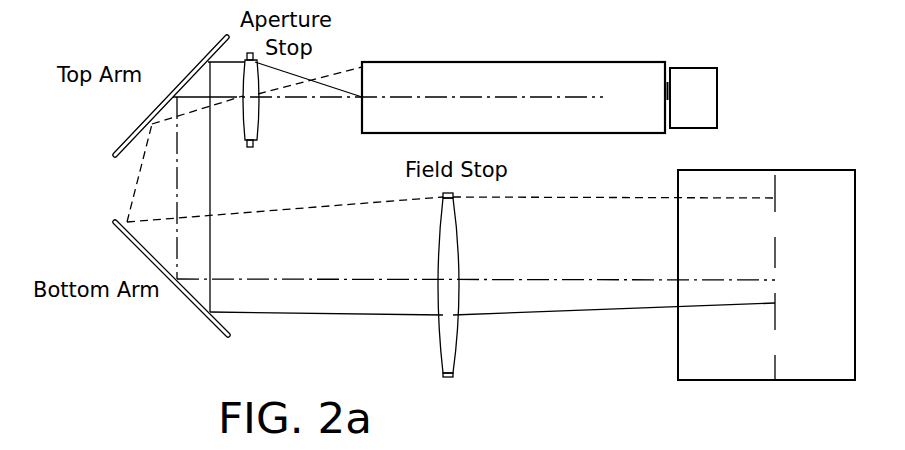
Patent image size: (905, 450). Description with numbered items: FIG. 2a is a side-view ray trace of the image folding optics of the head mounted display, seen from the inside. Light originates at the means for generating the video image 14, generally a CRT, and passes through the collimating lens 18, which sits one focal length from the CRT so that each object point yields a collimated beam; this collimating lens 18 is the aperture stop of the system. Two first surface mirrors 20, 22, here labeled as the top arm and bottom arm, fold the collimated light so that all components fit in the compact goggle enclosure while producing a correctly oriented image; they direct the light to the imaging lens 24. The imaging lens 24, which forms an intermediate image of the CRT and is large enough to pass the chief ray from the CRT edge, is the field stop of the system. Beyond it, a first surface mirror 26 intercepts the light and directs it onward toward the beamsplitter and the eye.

The means for generating the video image 14 is at (472, 62).
The collimating lens 18 is at (260, 122).
The front surface mirror 20 is at (182, 76).
The front surface mirror 22 is at (196, 307).
The imaging lens 24 is at (458, 245).
The first surface mirror 26 is at (678, 245).